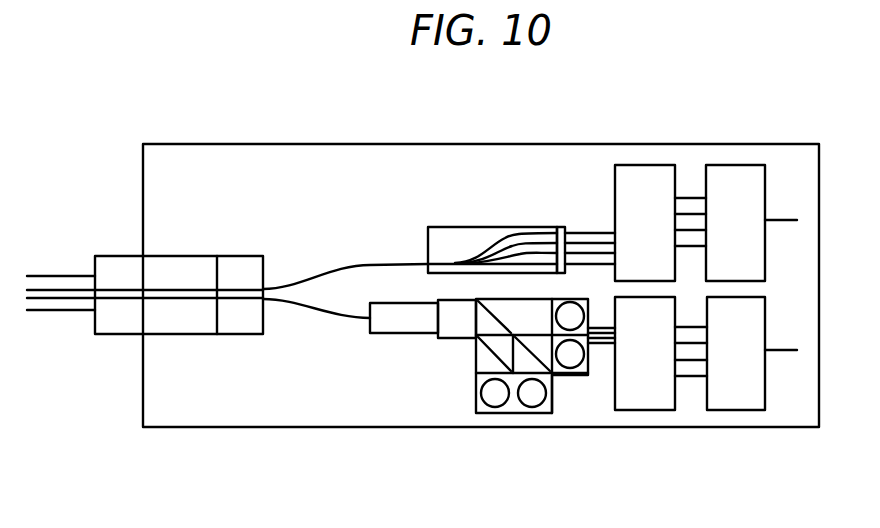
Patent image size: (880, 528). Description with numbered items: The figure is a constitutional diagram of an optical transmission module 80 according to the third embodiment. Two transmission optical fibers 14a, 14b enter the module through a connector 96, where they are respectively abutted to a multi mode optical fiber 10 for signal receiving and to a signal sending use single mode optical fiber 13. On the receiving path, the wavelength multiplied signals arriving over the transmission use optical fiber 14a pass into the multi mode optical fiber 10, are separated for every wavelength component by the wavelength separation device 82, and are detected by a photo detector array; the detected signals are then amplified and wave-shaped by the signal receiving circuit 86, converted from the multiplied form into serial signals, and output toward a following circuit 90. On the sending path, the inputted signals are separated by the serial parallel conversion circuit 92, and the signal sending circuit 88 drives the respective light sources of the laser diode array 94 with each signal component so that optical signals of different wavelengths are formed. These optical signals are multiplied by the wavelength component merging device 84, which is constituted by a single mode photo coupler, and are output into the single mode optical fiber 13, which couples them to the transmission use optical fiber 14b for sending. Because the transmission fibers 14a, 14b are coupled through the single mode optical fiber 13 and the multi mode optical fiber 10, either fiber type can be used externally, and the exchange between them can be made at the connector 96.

The optical transmission module 80 is at (417, 144).
The connector 96 is at (108, 265).
The transmission use optical fiber for signal receiving 14a is at (67, 306).
The transmission use optical fiber for sending signals 14b is at (72, 276).
The single mode optical fiber 13 is at (367, 263).
The multi mode optical fiber 10 is at (312, 318).
The wavelength component merging device 84 is at (478, 227).
The laser diode array 94 is at (560, 227).
The signal sending circuit 88 is at (642, 165).
The serial parallel conversion circuit 92 is at (733, 165).
The wavelength separation device 82 is at (492, 413).
The signal receiving circuit 86 is at (650, 410).
The transmitter signal processing circuit 90 is at (750, 410).